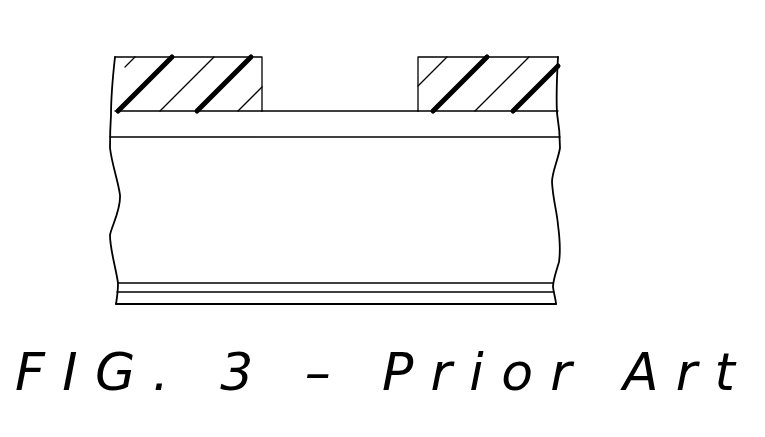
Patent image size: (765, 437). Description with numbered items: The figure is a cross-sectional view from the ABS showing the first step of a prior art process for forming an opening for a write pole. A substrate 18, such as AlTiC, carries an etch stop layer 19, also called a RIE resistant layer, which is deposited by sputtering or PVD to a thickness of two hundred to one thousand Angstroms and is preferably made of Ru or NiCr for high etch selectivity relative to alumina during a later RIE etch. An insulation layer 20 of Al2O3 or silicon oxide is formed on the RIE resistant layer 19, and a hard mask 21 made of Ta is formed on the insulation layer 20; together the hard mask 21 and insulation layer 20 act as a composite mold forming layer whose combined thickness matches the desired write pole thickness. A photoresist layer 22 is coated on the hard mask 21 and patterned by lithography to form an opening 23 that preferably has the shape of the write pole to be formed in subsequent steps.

The substrate 18 is at (123, 301).
The etch stop layer 19 is at (553, 290).
The insulation layer 20 is at (548, 222).
The hard mask 21 is at (545, 124).
The photoresist layer 22 is at (125, 80).
The opening 23 is at (320, 72).